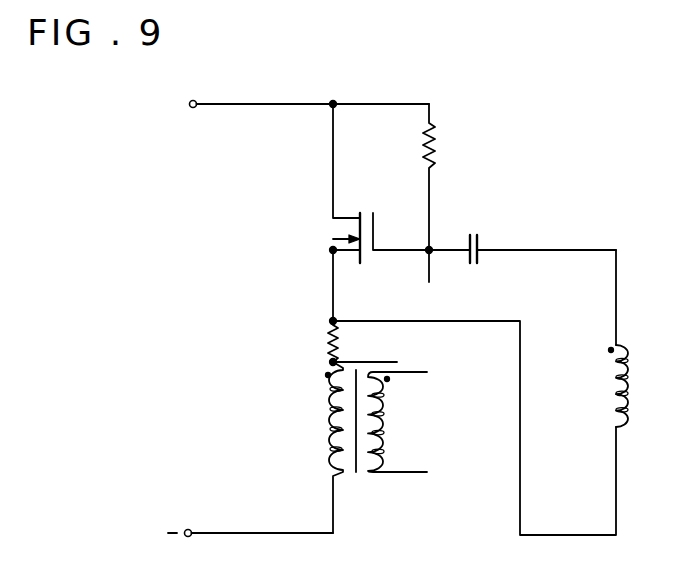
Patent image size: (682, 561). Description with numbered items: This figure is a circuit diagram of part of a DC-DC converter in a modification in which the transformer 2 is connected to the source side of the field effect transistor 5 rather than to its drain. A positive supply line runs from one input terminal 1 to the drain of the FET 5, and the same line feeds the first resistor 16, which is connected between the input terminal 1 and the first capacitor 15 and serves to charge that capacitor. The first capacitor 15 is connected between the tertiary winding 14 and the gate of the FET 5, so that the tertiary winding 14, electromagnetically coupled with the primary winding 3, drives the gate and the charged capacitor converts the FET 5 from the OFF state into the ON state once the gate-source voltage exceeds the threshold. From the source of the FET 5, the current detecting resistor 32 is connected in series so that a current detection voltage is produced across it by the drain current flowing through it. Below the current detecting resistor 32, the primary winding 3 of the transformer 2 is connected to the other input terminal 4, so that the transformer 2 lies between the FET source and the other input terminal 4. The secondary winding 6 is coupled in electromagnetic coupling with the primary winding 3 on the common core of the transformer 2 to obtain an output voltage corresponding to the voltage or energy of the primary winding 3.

The input terminal 1 is at (193, 100).
The other input terminal 4 is at (188, 530).
The field effect transistor 5 is at (338, 222).
The first resistor 16 is at (427, 150).
The first capacitor 15 is at (479, 246).
The tertiary winding 14 is at (630, 415).
The current detecting resistor 32 is at (328, 340).
The primary winding 3 is at (329, 408).
The transformer 2 is at (356, 473).
The secondary winding 6 is at (386, 418).